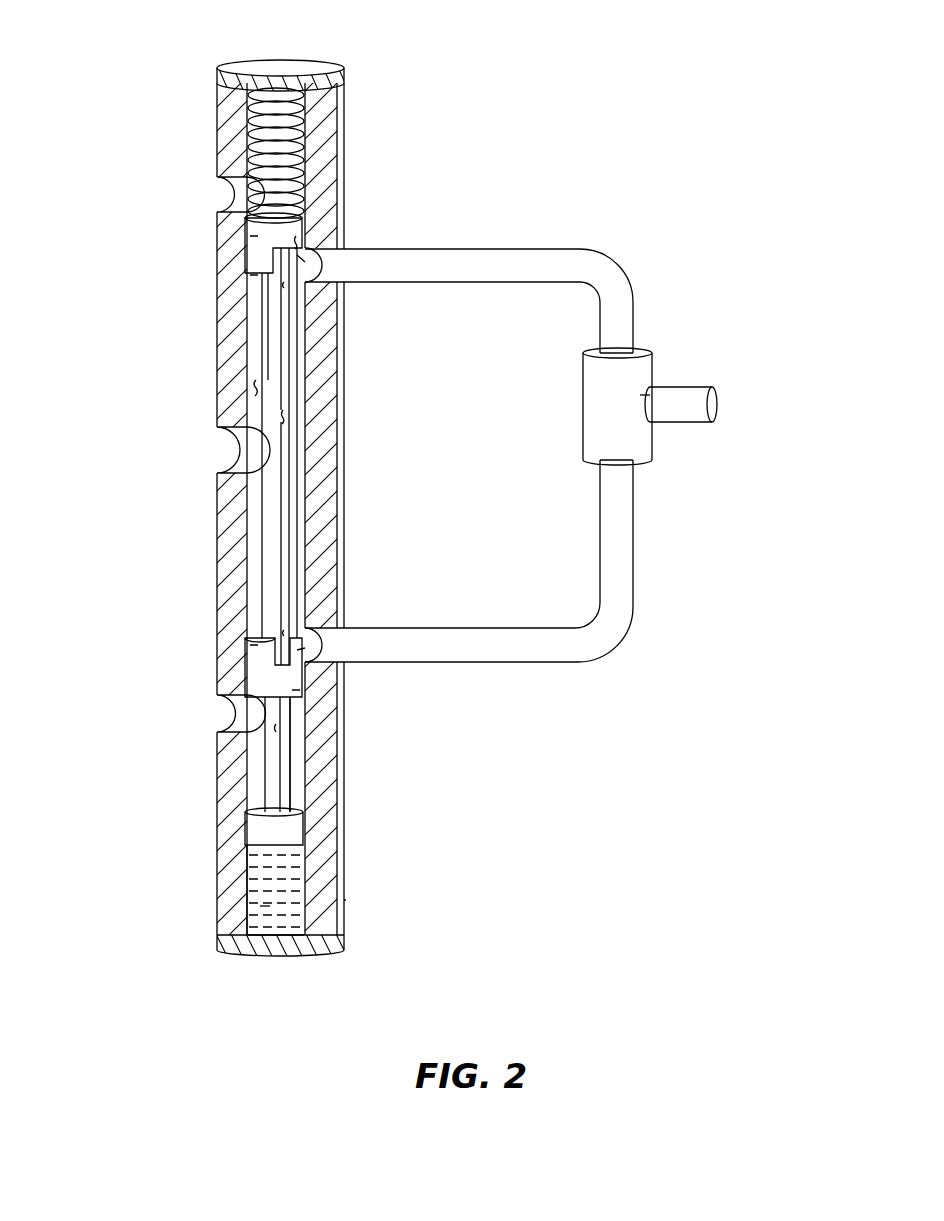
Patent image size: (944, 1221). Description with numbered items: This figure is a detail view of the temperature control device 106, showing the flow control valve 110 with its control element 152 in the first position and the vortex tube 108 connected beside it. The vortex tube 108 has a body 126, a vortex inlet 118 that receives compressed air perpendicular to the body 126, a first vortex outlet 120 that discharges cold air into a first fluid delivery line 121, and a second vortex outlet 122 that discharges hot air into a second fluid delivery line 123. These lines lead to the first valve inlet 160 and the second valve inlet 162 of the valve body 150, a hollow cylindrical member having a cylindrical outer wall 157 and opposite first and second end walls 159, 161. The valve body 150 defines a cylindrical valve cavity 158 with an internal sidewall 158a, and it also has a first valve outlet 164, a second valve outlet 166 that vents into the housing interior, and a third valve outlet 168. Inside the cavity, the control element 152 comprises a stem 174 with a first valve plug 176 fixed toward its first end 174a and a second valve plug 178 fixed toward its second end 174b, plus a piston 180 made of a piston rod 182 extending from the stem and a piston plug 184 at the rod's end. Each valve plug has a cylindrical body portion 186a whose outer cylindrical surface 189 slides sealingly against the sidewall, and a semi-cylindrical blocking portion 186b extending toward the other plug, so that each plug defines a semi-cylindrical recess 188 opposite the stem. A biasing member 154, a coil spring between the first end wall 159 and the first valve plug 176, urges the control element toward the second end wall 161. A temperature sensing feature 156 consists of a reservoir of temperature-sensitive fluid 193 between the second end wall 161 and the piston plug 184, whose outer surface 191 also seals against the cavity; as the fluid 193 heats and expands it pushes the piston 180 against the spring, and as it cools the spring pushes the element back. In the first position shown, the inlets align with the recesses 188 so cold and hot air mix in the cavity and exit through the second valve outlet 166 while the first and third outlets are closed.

The temperature control device 106 is at (400, 899).
The vortex tube 108 is at (662, 352).
The flow control valve 110 is at (352, 135).
The vortex inlet 118 is at (713, 403).
The first vortex outlet 120 is at (634, 350).
The first fluid delivery line 121 is at (531, 249).
The second vortex outlet 122 is at (636, 465).
The second fluid delivery line 123 is at (531, 663).
The body 126 is at (632, 417).
The valve body 150 is at (320, 152).
The control element 152 is at (262, 542).
The biasing member 154 is at (310, 112).
The temperature sensing feature 156 is at (300, 941).
The cylindrical outer wall 157 is at (233, 866).
The valve cavity 158 is at (258, 355).
The internal sidewall 158a is at (252, 388).
The first end wall 159 is at (255, 64).
The first valve inlet 160 is at (322, 266).
The second end wall 161 is at (242, 951).
The second valve inlet 162 is at (330, 641).
The first valve outlet 164 is at (235, 195).
The second valve outlet 166 is at (235, 449).
The third valve outlet 168 is at (235, 713).
The stem 174 is at (284, 416).
The first end of the stem 174a is at (318, 272).
The second end of the stem 174b is at (302, 646).
The first valve plug 176 is at (243, 247).
The second valve plug 178 is at (267, 687).
The piston 180 is at (292, 781).
The piston rod 182 is at (292, 739).
The piston plug 184 is at (298, 823).
The cylindrical body portion 186a is at (258, 236).
The semi-cylindrical blocking portion 186b is at (258, 275).
The semi-cylindrical recess 188 is at (288, 292).
The outer cylindrical surface 189 is at (298, 238).
The outer surface 191 is at (285, 839).
The fluid 193 is at (265, 908).